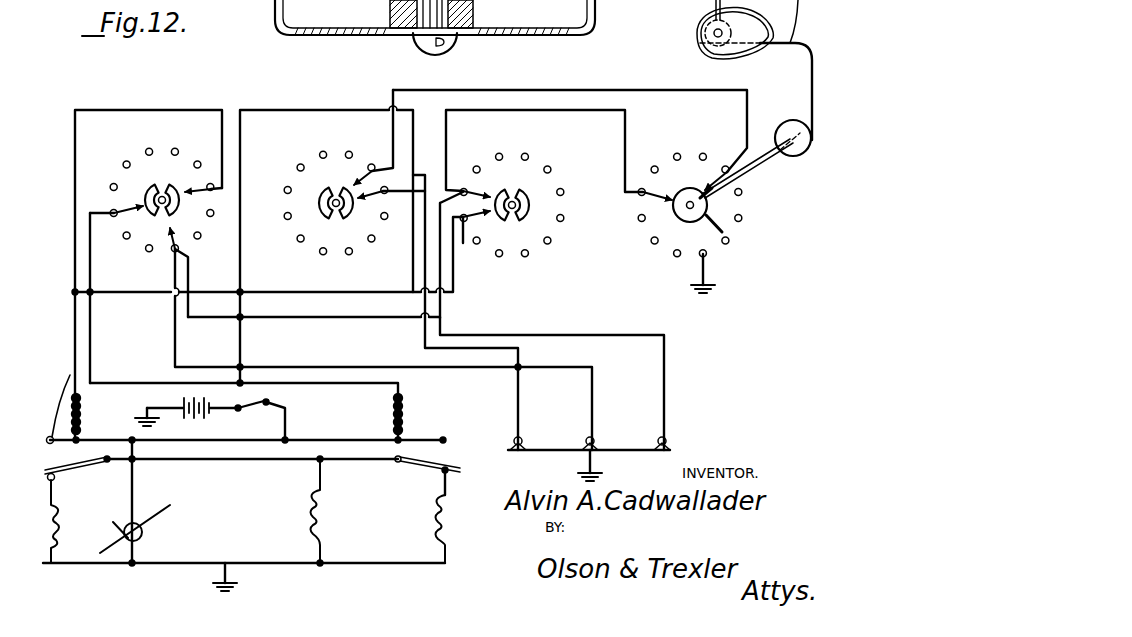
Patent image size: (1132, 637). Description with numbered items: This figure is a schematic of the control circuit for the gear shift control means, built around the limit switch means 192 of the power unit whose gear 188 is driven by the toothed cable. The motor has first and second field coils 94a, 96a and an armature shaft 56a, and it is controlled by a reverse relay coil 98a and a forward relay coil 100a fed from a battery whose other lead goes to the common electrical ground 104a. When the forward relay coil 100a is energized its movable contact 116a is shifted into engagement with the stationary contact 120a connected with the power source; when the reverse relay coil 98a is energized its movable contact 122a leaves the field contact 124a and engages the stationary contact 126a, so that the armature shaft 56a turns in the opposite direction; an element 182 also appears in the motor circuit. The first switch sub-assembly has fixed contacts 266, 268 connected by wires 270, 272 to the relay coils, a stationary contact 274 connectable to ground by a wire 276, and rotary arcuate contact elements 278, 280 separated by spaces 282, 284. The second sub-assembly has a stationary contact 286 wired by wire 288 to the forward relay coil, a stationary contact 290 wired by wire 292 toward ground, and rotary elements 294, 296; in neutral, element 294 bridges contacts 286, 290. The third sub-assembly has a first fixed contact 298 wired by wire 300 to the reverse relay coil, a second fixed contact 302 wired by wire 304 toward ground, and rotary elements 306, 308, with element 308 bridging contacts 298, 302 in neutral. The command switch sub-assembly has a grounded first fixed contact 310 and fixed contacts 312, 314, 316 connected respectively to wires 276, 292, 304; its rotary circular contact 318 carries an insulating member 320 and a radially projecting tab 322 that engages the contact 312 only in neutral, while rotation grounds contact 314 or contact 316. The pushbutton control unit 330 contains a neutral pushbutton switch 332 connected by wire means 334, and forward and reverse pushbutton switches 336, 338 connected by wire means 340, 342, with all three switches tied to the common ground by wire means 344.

The armature shaft 56a is at (172, 512).
The first field coil 94a is at (72, 538).
The second field coil 96a is at (438, 535).
The reverse relay coil 98a is at (83, 425).
The forward relay coil 100a is at (392, 428).
The common electrical ground 104a is at (150, 428).
The movable contact 116a is at (443, 438).
The stationary contact 120a is at (443, 474).
The movable contact 122a is at (58, 470).
The field contact 124a is at (66, 394).
The stationary contact 126a is at (56, 480).
The coil 182 is at (313, 523).
The gear 188 is at (786, 120).
The limit switch means 192 is at (313, 99).
The fixed electrical contact 266 is at (210, 185).
The fixed electrical contact 268 is at (103, 110).
The wire 270 is at (158, 110).
The wire 272 is at (121, 380).
The stationary contact 274 is at (175, 250).
The wire 276 is at (316, 318).
The arcuate electrical contact element 278 is at (165, 184).
The arcuate electrical contact element 280 is at (112, 210).
The space 282 is at (162, 192).
The space 284 is at (160, 226).
The stationary contact 286 is at (385, 195).
The wire 288 is at (348, 110).
The stationary contact 290 is at (372, 168).
The wire 292 is at (592, 90).
The arcuate electrical contact element 294 is at (345, 182).
The arcuate electrical contact element 296 is at (316, 195).
The first fixed contact 298 is at (477, 238).
The wire 300 is at (272, 290).
The second fixed contact 302 is at (463, 186).
The wire 304 is at (522, 108).
The arcuate electrical contact element 306 is at (537, 197).
The arcuate electrical contact element 308 is at (500, 225).
The first fixed contact 310 is at (700, 256).
The fixed contact 312 is at (732, 243).
The fixed contact 314 is at (727, 168).
The fixed contact 316 is at (640, 200).
The circular electrical contact 318 is at (688, 222).
The insulating member 320 is at (680, 184).
The radially projecting tab 322 is at (722, 218).
The pushbutton control unit 330 is at (676, 412).
The pushbutton switch 332 is at (596, 438).
The wire means 334 is at (390, 357).
The pushbutton switch 336 is at (522, 438).
The pushbutton switch 338 is at (668, 436).
The wire means 340 is at (498, 348).
The wire means 342 is at (576, 332).
The wire means 344 is at (585, 455).